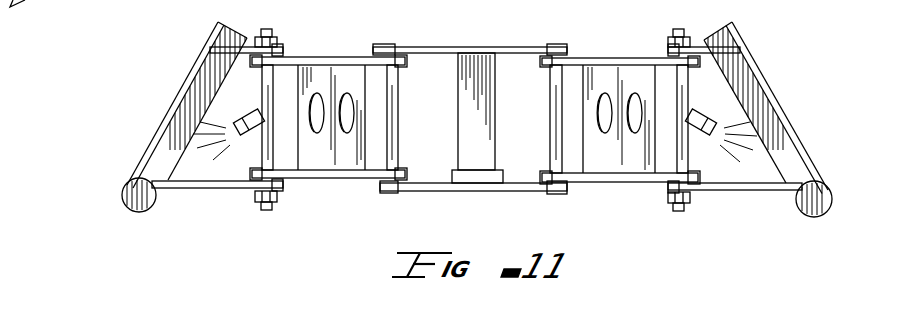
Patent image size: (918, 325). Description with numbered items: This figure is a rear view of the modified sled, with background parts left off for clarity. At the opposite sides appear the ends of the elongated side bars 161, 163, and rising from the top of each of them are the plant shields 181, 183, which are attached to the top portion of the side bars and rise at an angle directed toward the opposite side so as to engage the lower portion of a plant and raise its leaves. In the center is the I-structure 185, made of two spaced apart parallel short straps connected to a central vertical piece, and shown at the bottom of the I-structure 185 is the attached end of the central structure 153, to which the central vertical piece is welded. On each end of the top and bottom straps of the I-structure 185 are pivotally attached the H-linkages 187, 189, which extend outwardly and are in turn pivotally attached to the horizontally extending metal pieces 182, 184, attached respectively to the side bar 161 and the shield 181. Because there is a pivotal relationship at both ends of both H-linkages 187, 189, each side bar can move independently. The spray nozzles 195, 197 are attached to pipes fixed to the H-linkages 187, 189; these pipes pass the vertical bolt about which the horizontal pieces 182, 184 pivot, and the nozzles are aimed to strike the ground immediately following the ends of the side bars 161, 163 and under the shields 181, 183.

The central structure 153 is at (452, 171).
The elongated side bar 161 is at (830, 210).
The elongated side bar 163 is at (122, 190).
The plant shield 181 is at (780, 107).
The horizontally extending metal piece 182 is at (767, 191).
The plant shield 183 is at (173, 108).
The horizontally extending metal piece 184 is at (670, 47).
The I-structure 185 is at (474, 26).
The H-linkage 187 is at (344, 56).
The H-linkage 189 is at (613, 58).
The spray nozzle 195 is at (247, 132).
The spray nozzle 197 is at (705, 136).